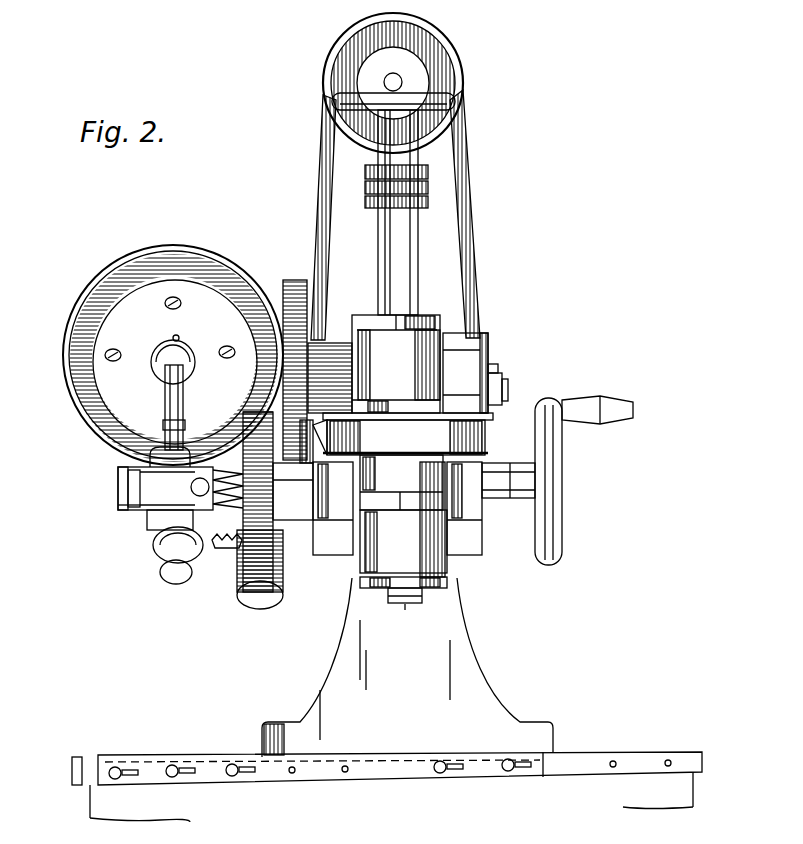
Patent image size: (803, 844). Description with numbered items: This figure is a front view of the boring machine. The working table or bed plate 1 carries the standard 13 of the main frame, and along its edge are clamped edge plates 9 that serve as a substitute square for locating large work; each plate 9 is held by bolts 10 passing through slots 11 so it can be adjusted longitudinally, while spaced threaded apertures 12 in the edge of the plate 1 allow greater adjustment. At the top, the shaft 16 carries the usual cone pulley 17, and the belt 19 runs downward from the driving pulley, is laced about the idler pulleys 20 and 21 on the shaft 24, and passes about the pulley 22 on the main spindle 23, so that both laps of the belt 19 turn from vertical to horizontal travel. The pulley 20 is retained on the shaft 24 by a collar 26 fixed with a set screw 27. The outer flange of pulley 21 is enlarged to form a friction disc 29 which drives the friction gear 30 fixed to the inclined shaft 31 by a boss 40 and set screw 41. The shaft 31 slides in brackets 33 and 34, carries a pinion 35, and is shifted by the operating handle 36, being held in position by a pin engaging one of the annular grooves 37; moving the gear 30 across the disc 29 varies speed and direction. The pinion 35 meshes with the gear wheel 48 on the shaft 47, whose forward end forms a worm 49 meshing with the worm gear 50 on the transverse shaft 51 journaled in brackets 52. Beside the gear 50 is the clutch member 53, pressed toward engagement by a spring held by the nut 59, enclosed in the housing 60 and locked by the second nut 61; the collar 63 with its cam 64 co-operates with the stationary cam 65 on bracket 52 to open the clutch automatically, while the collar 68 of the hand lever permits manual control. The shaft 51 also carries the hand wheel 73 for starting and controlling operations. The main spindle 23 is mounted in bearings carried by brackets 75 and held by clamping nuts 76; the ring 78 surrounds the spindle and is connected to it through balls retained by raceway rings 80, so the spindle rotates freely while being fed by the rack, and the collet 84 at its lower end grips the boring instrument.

The working table or bed plate 1 is at (690, 752).
The edge plate 9 is at (150, 762).
The bolt 10 is at (175, 768).
The slot 11 is at (190, 773).
The threaded aperture 12 is at (666, 760).
The standard 13 is at (462, 640).
The shaft 16 is at (400, 79).
The cone pulley 17 is at (418, 37).
The belt 19 is at (318, 195).
The idler pulley 20 is at (470, 362).
The idler pulley 21 is at (330, 345).
The pulley 22 is at (493, 416).
The main spindle 23 is at (385, 242).
The shaft 24 is at (508, 390).
The collar 26 is at (502, 378).
The set screw 27 is at (500, 365).
The friction disc 29 is at (293, 280).
The friction gear 30 is at (222, 262).
The shaft 31 is at (165, 392).
The bracket 33 is at (150, 460).
The bracket 34 is at (153, 545).
The pinion 35 is at (147, 520).
The operating handle 36 is at (160, 570).
The annular groove 37 is at (163, 427).
The boss 40 is at (192, 358).
The set screw 41 is at (173, 337).
The shaft 47 is at (255, 598).
The gear wheel 48 is at (222, 550).
The worm 49 is at (283, 580).
The worm gear 50 is at (240, 430).
The transverse shaft 51 is at (433, 476).
The bracket 52 is at (360, 462).
The clutch member 53 is at (275, 470).
The nut 59 is at (118, 472).
The sleeve or housing 60 is at (128, 488).
The second nut 61 is at (118, 506).
The collar 63 is at (262, 412).
The cam 64 is at (300, 440).
The stationary cam 65 is at (315, 440).
The collar 68 is at (192, 486).
The hand wheel 73 is at (562, 468).
The bracket 75 is at (430, 352).
The clamping nut 76 is at (385, 395).
The ring 78 is at (365, 190).
The raceway ring 80 is at (428, 200).
The collet 84 is at (404, 612).